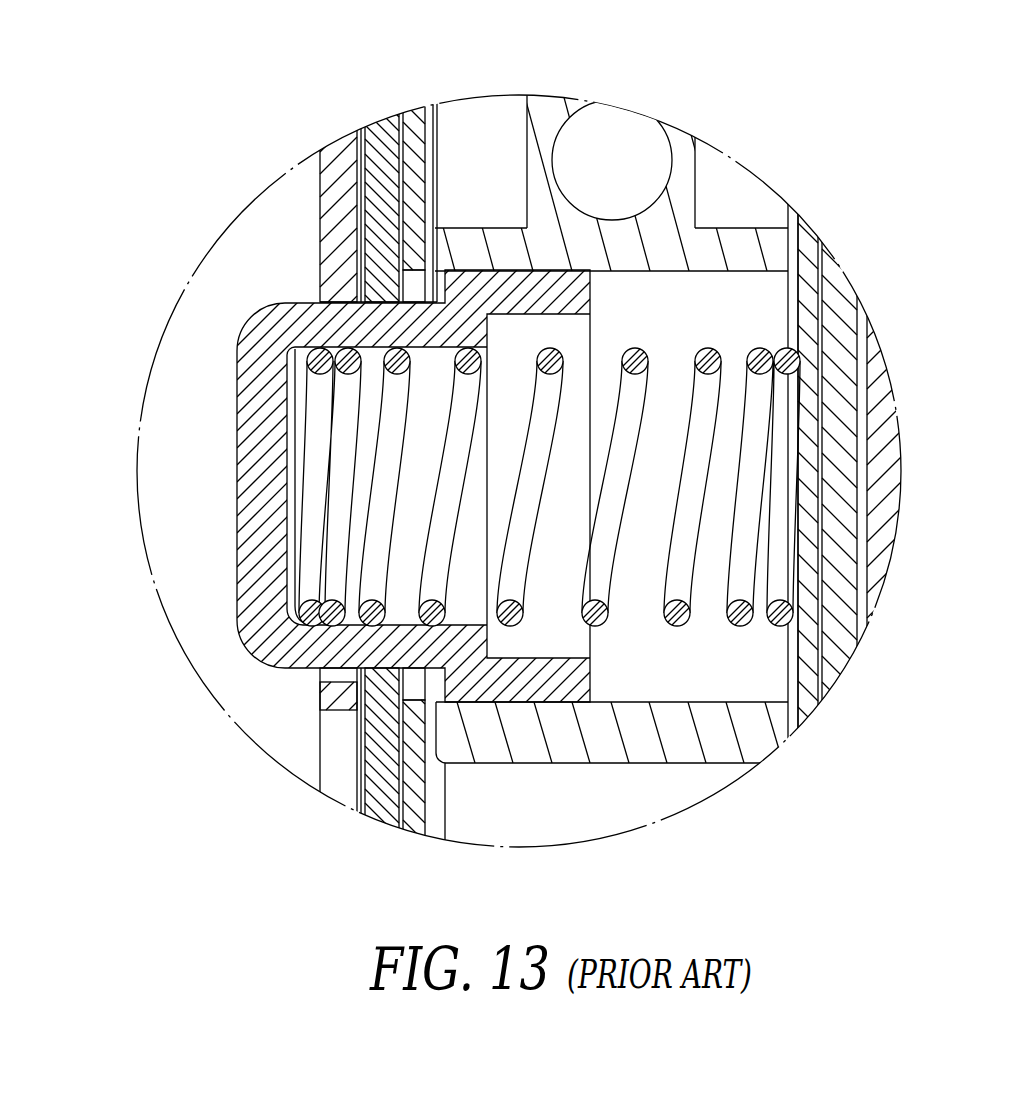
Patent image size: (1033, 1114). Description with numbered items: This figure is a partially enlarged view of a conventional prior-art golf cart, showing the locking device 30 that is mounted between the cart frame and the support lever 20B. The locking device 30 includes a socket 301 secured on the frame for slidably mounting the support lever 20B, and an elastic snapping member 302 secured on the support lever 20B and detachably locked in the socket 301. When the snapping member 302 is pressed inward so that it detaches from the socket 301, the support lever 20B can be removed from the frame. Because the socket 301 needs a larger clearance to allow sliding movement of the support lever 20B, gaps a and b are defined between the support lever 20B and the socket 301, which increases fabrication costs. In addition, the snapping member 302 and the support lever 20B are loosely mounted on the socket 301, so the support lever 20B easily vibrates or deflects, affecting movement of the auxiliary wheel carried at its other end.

The locking device 30 is at (411, 469).
The socket 301 is at (338, 175).
The elastic snapping member 302 is at (262, 447).
The gap a is at (342, 112).
The gap b is at (303, 268).
The support lever 20B is at (413, 790).